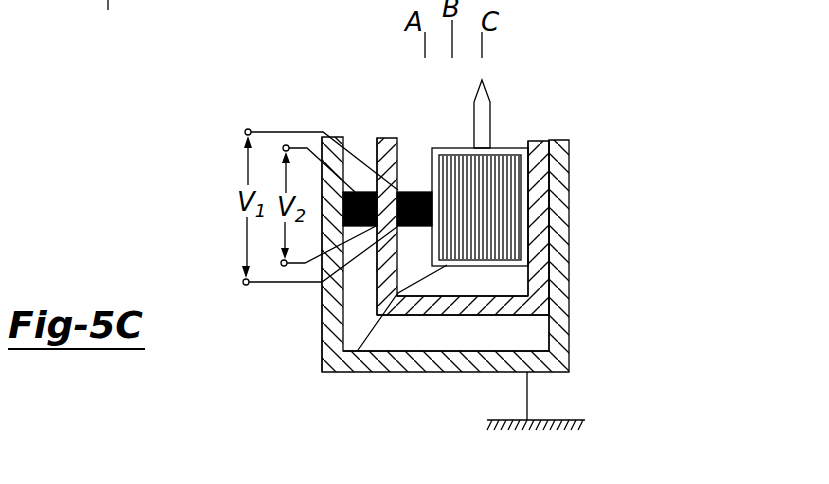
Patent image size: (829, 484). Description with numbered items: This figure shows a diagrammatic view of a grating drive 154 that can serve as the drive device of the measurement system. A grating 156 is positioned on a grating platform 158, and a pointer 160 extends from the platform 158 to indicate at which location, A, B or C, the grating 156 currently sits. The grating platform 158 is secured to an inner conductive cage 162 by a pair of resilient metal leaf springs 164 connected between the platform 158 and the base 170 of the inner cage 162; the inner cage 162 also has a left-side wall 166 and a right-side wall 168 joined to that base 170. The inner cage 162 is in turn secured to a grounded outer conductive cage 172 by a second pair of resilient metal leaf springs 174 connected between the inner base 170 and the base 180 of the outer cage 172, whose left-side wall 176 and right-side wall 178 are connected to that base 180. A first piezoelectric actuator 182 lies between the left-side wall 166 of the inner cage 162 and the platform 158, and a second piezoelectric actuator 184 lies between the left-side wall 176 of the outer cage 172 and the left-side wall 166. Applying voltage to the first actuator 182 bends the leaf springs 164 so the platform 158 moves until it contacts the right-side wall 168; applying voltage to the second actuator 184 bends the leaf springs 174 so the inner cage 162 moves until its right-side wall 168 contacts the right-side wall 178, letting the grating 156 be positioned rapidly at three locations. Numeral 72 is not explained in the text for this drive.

The grating drive 154 is at (237, 0).
The partial numeral (adjacent figure) 72 is at (11, 51).
The grating 156 is at (463, 149).
The grating platform 158 is at (507, 147).
The pointer 160 is at (488, 82).
The inner conductive cage 162 is at (370, 306).
The leaf springs 164 is at (487, 297).
The left-side wall 166 is at (382, 137).
The right-side wall 168 is at (542, 174).
The base 170 is at (447, 314).
The outer conductive cage 172 is at (314, 350).
The leaf springs 174 is at (508, 351).
The left-side wall 176 is at (320, 300).
The right-side wall 178 is at (607, 220).
The base 180 is at (412, 357).
The first piezoelectric actuator 182 is at (420, 192).
The second piezoelectric actuator 184 is at (358, 192).